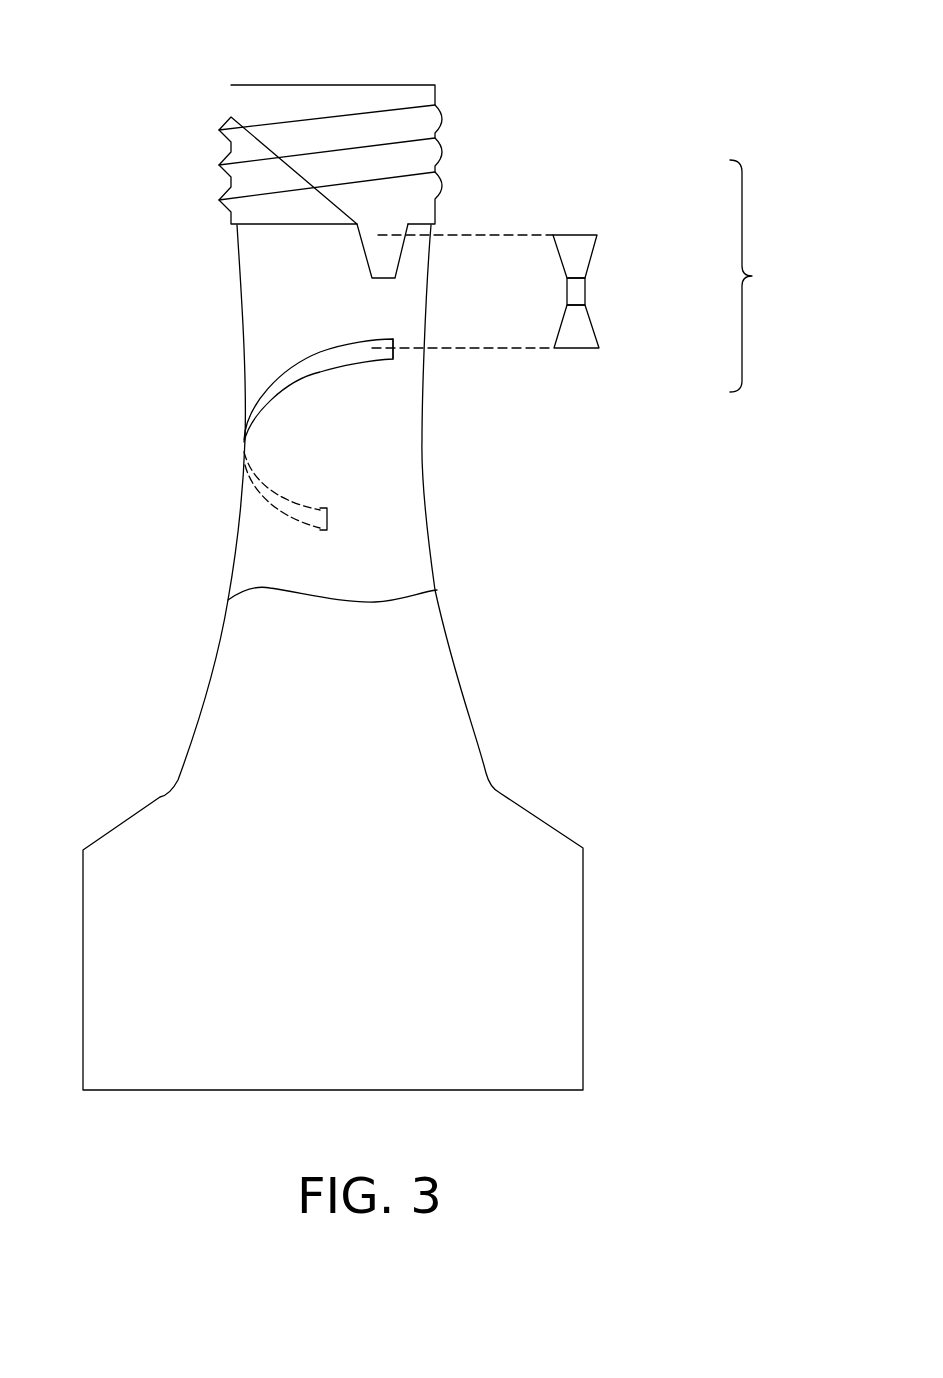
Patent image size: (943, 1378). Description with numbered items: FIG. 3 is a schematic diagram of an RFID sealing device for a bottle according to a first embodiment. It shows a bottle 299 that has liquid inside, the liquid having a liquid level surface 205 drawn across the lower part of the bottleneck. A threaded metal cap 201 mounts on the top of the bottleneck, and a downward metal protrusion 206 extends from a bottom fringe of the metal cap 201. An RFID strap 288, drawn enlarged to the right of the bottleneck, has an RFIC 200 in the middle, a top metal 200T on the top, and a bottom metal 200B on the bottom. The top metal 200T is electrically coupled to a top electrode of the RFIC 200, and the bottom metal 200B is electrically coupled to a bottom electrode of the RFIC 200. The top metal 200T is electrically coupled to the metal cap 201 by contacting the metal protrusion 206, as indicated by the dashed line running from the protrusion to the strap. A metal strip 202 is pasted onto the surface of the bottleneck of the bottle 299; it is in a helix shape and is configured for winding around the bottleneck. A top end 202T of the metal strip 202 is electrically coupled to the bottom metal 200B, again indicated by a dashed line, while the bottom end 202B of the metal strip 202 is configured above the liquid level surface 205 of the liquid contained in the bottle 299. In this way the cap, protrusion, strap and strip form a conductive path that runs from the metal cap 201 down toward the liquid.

The threaded metal cap 201 is at (372, 97).
The downward metal protrusion 206 is at (378, 260).
The metal strip 202 is at (310, 365).
The top end of the metal strip 202T is at (364, 362).
The bottom end of the metal strip 202B is at (293, 518).
The liquid level surface 205 is at (363, 602).
The top metal 200T is at (580, 248).
The RFIC 200 is at (578, 294).
The bottom metal 200B is at (578, 340).
The RFID strap 288 is at (765, 276).
The bottle 299 is at (357, 1025).